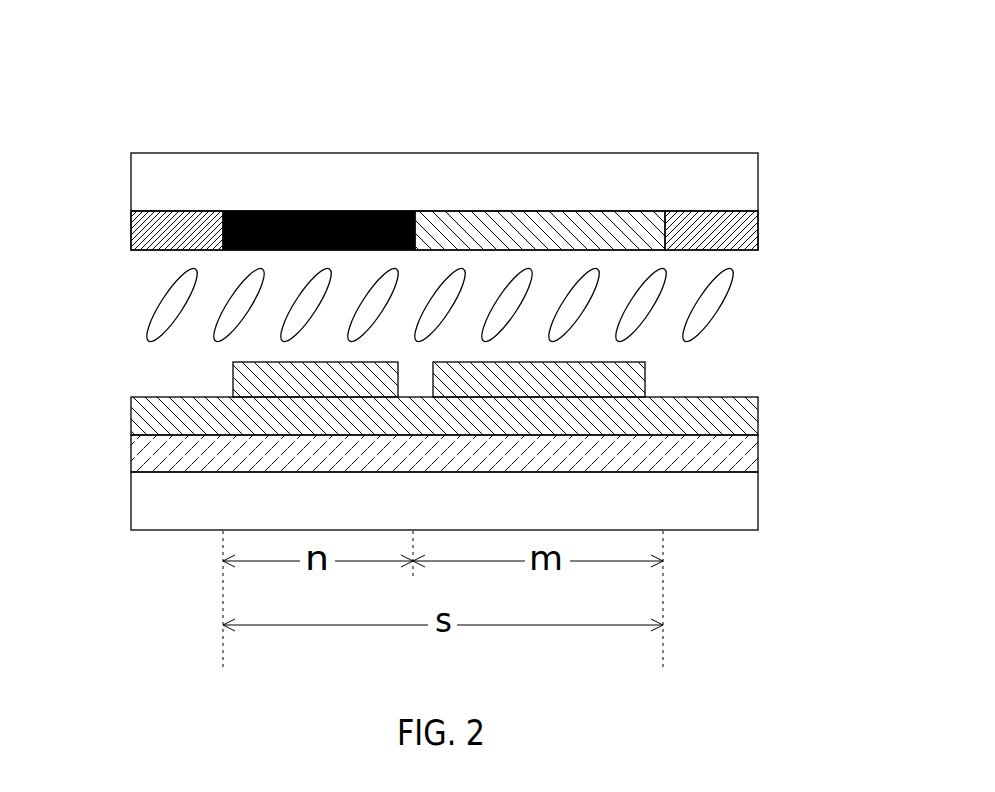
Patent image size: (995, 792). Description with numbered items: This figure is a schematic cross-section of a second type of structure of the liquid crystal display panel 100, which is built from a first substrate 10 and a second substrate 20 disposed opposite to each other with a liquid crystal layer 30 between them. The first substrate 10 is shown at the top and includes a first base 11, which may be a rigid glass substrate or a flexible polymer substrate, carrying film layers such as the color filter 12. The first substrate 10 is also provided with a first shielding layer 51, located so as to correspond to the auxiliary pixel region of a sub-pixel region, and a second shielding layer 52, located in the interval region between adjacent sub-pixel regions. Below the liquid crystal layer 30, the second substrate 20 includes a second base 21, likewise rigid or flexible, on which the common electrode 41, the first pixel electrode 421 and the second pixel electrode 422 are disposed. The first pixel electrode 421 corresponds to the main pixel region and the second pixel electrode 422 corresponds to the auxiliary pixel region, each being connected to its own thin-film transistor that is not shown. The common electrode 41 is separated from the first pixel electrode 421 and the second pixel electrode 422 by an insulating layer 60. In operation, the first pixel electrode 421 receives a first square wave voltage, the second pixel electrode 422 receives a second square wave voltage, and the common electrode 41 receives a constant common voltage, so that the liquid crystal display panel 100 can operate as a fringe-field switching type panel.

The liquid crystal display panel 100 is at (183, 43).
The first substrate 10 is at (110, 193).
The first base 11 is at (738, 182).
The color filter 12 is at (535, 225).
The first shielding layer 51 is at (313, 211).
The second shielding layer 52 is at (712, 225).
The liquid crystal layer 30 is at (713, 298).
The second substrate 20 is at (110, 446).
The second base 21 is at (738, 500).
The common electrode 41 is at (738, 452).
The insulating layer 60 is at (740, 415).
The first pixel electrode 421 is at (645, 372).
The second pixel electrode 422 is at (233, 372).